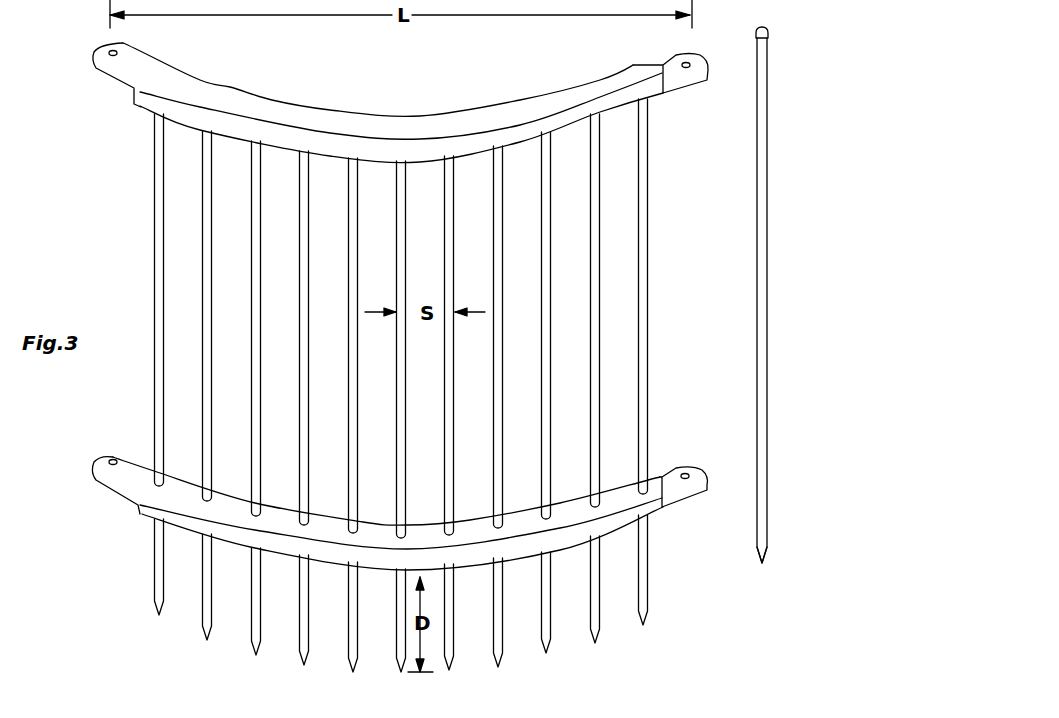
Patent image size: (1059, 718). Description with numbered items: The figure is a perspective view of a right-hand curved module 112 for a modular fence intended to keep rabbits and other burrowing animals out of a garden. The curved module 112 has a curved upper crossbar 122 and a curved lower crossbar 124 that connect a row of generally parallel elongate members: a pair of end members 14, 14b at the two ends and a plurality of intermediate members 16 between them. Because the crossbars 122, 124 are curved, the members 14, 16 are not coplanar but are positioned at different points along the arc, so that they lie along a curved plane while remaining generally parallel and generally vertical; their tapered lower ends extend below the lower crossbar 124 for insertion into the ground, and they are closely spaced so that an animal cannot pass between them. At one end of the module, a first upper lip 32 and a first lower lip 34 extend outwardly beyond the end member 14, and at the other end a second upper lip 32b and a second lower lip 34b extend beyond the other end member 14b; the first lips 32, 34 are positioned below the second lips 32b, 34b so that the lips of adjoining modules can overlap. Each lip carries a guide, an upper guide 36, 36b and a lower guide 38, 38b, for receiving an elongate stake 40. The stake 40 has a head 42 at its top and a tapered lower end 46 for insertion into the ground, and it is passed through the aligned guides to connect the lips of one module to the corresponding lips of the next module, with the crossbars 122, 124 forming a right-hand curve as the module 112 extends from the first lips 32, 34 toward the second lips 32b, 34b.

The end member 14 is at (648, 250).
The other end member 14b is at (154, 250).
The intermediate members 16 is at (300, 345).
The first upper lip 32 is at (678, 60).
The second upper lip 32b is at (101, 53).
The first lower lip 34 is at (698, 470).
The second lower lip 34b is at (104, 460).
The upper guide 36 is at (688, 62).
The upper guide 36b is at (118, 52).
The lower guide 38 is at (685, 472).
The lower guide 38b is at (116, 460).
The elongate stake 40 is at (744, 294).
The head 42 is at (763, 26).
The tapered lower end 46 is at (757, 553).
The curved module 112 is at (324, 86).
The curved upper crossbar 122 is at (511, 108).
The curved lower crossbar 124 is at (568, 542).